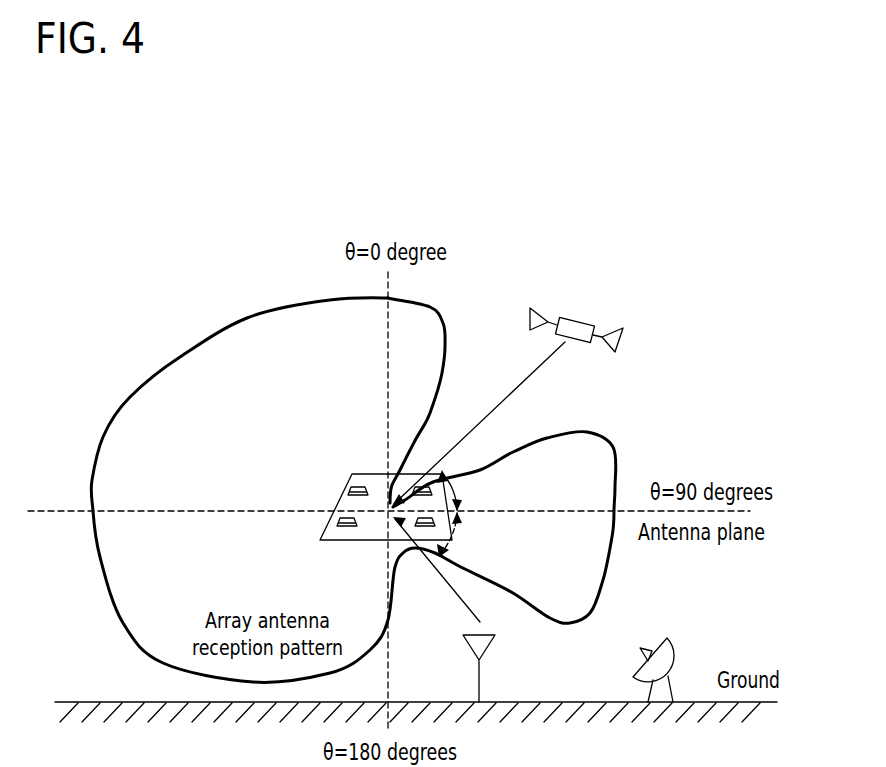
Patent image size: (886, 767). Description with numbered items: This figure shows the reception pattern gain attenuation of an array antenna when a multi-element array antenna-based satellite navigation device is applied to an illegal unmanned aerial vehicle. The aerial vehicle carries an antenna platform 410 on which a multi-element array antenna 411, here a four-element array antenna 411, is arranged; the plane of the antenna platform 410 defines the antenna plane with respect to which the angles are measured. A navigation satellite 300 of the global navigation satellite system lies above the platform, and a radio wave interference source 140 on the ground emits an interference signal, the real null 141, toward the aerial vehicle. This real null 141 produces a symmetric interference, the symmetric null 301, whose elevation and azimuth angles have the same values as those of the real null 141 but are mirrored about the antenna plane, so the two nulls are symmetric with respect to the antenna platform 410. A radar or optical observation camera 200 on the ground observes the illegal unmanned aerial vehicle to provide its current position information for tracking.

The radio wave interference source 140 is at (488, 643).
The interference signal (real null) 141 is at (447, 583).
The radar or optical observation camera 200 is at (668, 648).
The navigation satellite 300 is at (587, 320).
The symmetric interference (symmetric null) 301 is at (520, 385).
The antenna platform 410 is at (338, 471).
The multi-element array antenna 411 is at (340, 492).